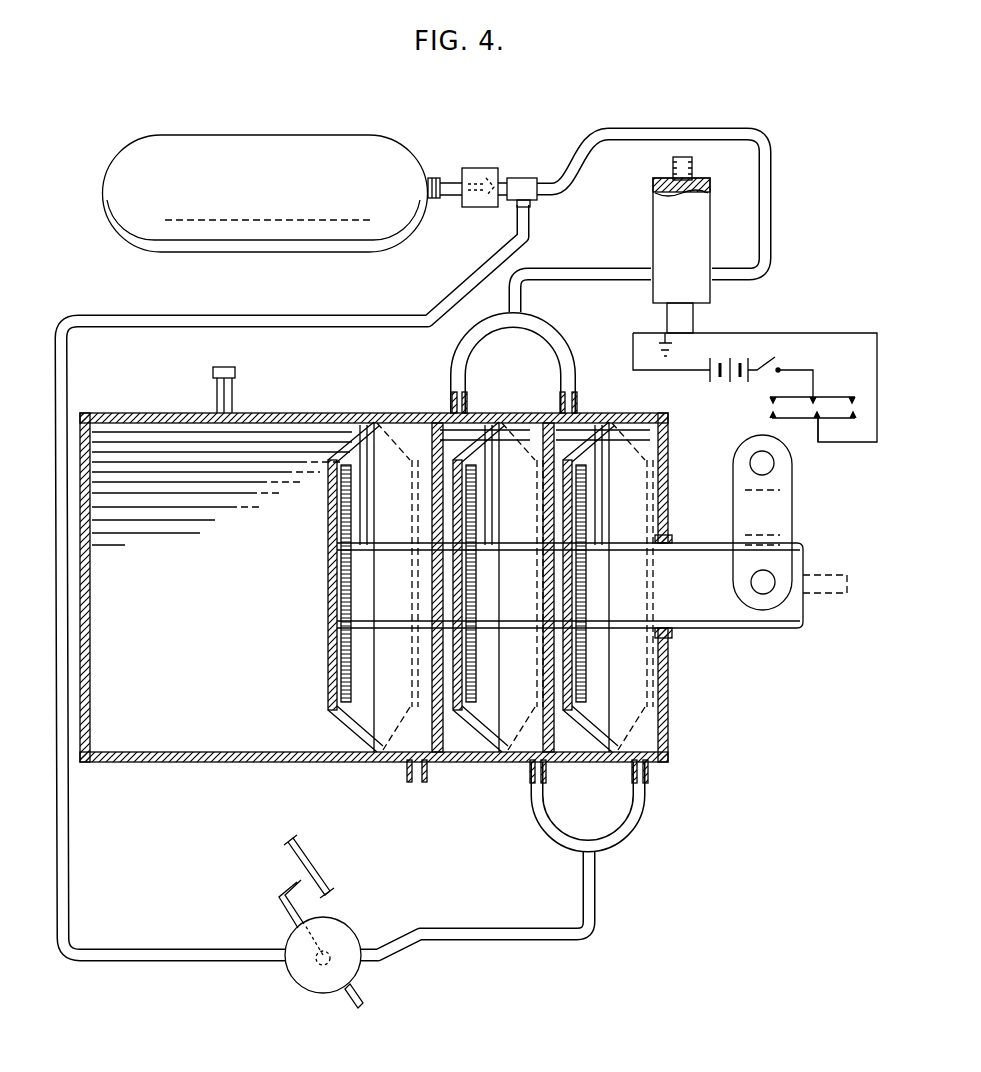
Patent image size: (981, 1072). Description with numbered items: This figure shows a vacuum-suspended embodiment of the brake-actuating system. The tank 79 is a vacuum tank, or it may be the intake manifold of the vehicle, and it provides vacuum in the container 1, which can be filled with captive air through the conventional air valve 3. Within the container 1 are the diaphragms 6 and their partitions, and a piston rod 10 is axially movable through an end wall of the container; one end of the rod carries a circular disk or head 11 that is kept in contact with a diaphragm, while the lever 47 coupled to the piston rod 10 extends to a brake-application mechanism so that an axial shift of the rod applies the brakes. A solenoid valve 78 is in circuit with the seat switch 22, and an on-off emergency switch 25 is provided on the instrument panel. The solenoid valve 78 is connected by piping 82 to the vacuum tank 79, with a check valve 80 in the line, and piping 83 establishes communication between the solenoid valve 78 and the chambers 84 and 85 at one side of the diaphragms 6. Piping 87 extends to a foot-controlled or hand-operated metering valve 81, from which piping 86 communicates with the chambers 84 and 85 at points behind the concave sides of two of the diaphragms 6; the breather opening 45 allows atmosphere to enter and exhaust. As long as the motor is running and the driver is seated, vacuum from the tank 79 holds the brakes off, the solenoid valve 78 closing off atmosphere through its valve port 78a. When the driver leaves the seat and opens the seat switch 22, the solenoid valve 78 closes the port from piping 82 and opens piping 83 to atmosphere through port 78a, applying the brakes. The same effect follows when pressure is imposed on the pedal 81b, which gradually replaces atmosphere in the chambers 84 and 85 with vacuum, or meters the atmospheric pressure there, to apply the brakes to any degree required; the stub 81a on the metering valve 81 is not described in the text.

The container 1 is at (140, 438).
The air valve 3 is at (233, 392).
The diaphragms 6 is at (327, 527).
The piston rod 10 is at (690, 560).
The disk or head 11 is at (358, 680).
The seat switch 22 is at (833, 395).
The emergency switch 25 is at (766, 362).
The breather opening 45 is at (417, 785).
The lever 47 is at (777, 510).
The solenoid valve 78 is at (663, 223).
The valve port 78a is at (682, 157).
The vacuum tank 79 is at (278, 150).
The check valve 80 is at (473, 180).
The metering valve 81 is at (340, 932).
The valve drain 81a is at (362, 993).
The pedal 81b is at (303, 853).
The piping 82 is at (765, 191).
The piping 83 is at (548, 330).
The chamber 84 is at (452, 410).
The chamber 85 is at (580, 423).
The piping 86 is at (617, 847).
The piping 87 is at (157, 953).